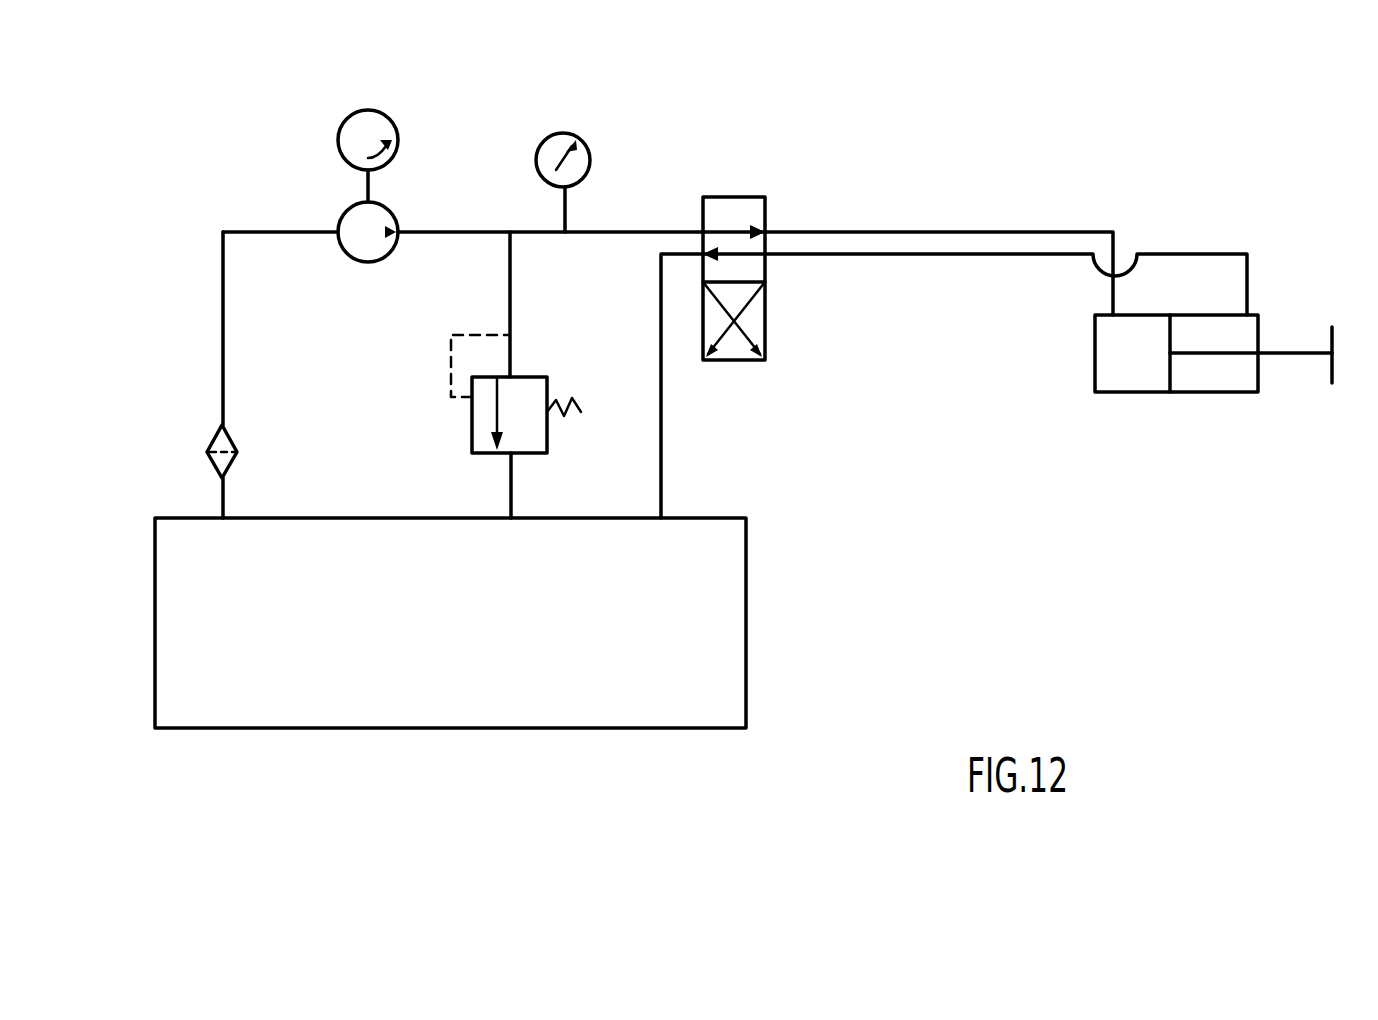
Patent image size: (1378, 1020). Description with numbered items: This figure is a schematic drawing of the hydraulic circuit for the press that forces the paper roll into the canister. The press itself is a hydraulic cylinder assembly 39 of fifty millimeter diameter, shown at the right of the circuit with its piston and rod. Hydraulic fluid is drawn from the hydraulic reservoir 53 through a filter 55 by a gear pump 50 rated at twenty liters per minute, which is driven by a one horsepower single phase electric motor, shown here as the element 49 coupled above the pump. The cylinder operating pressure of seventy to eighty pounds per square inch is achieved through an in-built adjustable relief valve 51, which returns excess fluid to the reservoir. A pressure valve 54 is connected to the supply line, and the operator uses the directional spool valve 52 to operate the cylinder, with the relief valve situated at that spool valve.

The hydraulic cylinder assembly 39 is at (1198, 405).
The motor 49 is at (365, 128).
The gear pump 50 is at (367, 240).
The adjustable relief valve 51 is at (527, 393).
The directional spool valve 52 is at (727, 210).
The hydraulic reservoir 53 is at (635, 639).
The pressure valve 54 is at (578, 162).
The filter 55 is at (225, 460).